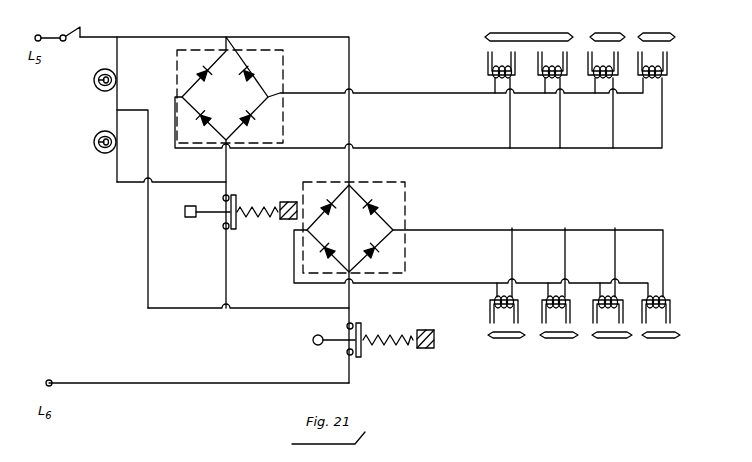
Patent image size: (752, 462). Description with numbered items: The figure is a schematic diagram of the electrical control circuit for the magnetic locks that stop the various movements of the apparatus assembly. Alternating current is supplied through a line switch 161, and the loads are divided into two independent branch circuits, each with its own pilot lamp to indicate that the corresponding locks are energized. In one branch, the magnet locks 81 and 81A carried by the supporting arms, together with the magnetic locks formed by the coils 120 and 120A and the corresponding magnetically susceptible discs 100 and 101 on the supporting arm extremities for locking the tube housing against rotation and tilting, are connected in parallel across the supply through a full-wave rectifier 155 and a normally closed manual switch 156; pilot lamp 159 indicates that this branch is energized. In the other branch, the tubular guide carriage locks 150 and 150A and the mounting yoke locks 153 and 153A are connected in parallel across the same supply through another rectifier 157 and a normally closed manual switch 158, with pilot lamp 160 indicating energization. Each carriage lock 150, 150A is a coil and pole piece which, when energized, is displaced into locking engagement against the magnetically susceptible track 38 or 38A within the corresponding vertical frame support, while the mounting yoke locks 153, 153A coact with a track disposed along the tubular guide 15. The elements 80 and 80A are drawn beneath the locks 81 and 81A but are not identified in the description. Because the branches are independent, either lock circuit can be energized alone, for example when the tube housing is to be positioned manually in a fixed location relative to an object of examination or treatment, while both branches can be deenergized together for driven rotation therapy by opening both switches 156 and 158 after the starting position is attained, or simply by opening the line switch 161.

The line switch 161 is at (84, 22).
The pilot lamp 160 is at (94, 86).
The pilot lamp 159 is at (92, 149).
The rectifier 157 is at (286, 80).
The normally closed manual switch 158 is at (222, 218).
The full-wave rectifier 155 is at (408, 218).
The normally closed manual switch 156 is at (347, 348).
The tubular guide 15 is at (522, 35).
The magnetically susceptible track 38 is at (602, 34).
The track 38A is at (656, 34).
The mounting yoke lock 153 is at (485, 59).
The mounting yoke lock 153A is at (537, 68).
The electromagnetically energized lock 150 is at (593, 62).
The magnetic lock 150A is at (667, 72).
The magnet lock 81 is at (488, 312).
The magnet lock 81A is at (541, 307).
The coil 120 is at (594, 307).
The coil 120A is at (672, 312).
The armature bar 80 is at (510, 341).
The armature bar 80A is at (563, 341).
The magnetically susceptible disc 100 is at (617, 341).
The magnetically susceptible disc 101 is at (662, 341).